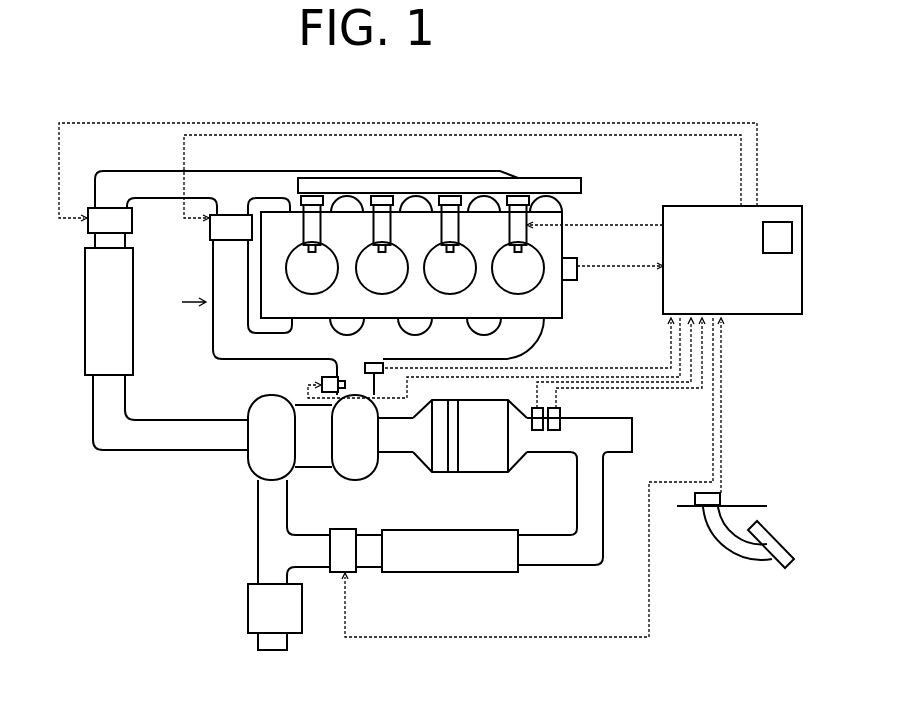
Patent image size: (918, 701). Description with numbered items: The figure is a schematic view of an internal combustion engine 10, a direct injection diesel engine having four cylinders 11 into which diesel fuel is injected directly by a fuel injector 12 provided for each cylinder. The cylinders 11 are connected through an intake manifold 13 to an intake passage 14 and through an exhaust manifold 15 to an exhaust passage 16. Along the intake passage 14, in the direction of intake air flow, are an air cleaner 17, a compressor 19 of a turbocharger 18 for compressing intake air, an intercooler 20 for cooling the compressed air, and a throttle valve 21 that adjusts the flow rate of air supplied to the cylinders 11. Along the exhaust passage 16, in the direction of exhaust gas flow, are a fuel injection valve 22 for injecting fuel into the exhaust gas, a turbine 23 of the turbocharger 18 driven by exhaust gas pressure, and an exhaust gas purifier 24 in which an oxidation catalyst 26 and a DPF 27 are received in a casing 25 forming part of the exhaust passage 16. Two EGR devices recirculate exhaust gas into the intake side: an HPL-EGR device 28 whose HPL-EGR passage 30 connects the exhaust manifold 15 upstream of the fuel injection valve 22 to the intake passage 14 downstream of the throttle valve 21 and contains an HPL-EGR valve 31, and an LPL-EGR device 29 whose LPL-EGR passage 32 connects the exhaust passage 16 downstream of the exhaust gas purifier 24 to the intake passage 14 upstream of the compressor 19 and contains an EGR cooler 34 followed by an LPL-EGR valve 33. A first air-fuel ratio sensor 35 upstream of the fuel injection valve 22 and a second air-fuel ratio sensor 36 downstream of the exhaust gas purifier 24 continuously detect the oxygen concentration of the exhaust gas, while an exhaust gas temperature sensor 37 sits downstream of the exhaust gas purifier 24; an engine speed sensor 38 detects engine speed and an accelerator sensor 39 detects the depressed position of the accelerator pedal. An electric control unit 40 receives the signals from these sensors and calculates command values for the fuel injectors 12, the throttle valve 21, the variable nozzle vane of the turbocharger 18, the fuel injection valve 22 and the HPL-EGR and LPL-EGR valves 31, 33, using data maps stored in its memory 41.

The internal combustion engine 10 is at (163, 472).
The cylinder 11 is at (295, 262).
The fuel injector 12 is at (512, 237).
The intake manifold 13 is at (373, 173).
The intake passage 14 is at (132, 183).
The exhaust manifold 15 is at (515, 337).
The exhaust passage 16 is at (557, 443).
The air cleaner 17 is at (258, 602).
The turbocharger 18 is at (308, 455).
The compressor 19 is at (248, 457).
The intercooler 20 is at (135, 325).
The throttle valve 21 is at (122, 222).
The fuel injection valve 22 is at (327, 373).
The turbine 23 is at (360, 465).
The exhaust gas purifier 24 is at (436, 463).
The casing 25 is at (418, 457).
The oxidation catalyst 26 is at (442, 463).
The DPF 27 is at (482, 455).
The HPL-EGR device 28 is at (174, 303).
The LPL-EGR device 29 is at (482, 586).
The HPL-EGR passage 30 is at (225, 347).
The HPL-EGR valve 31 is at (218, 233).
The LPL-EGR passage 32 is at (570, 557).
The LPL-EGR valve 33 is at (337, 565).
The EGR cooler 34 is at (418, 568).
The first air-fuel ratio sensor 35 is at (369, 363).
The second air-fuel ratio sensor 36 is at (562, 410).
The exhaust gas temperature sensor 37 is at (530, 408).
The engine speed sensor 38 is at (568, 275).
The accelerator sensor 39 is at (720, 500).
The electric control unit 40 is at (768, 303).
The memory 41 is at (782, 228).